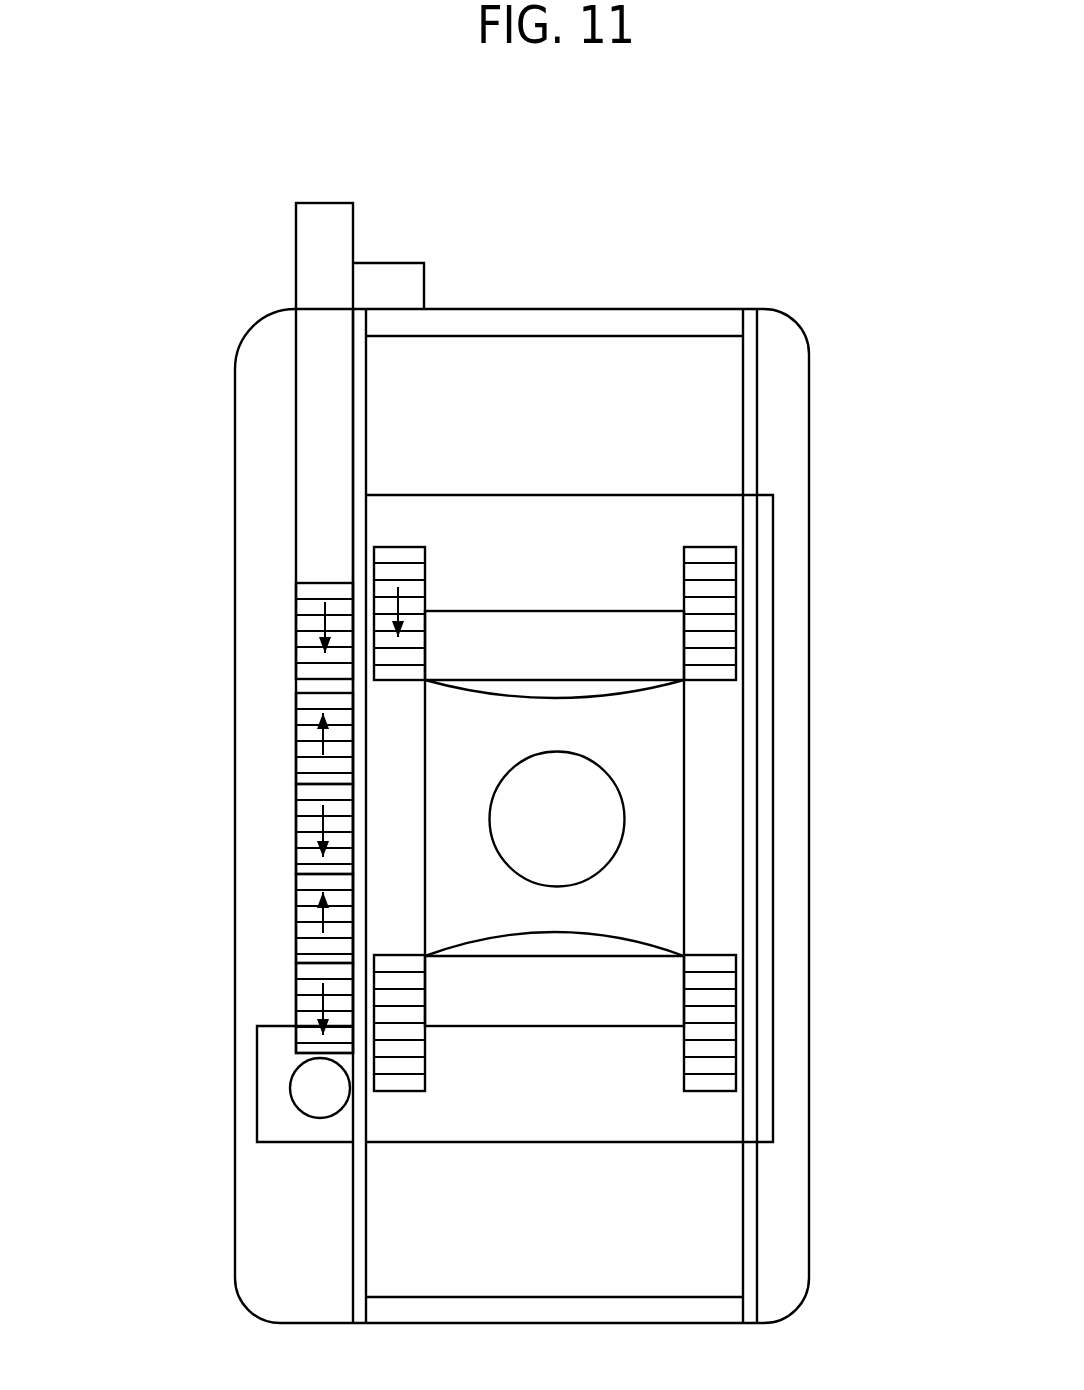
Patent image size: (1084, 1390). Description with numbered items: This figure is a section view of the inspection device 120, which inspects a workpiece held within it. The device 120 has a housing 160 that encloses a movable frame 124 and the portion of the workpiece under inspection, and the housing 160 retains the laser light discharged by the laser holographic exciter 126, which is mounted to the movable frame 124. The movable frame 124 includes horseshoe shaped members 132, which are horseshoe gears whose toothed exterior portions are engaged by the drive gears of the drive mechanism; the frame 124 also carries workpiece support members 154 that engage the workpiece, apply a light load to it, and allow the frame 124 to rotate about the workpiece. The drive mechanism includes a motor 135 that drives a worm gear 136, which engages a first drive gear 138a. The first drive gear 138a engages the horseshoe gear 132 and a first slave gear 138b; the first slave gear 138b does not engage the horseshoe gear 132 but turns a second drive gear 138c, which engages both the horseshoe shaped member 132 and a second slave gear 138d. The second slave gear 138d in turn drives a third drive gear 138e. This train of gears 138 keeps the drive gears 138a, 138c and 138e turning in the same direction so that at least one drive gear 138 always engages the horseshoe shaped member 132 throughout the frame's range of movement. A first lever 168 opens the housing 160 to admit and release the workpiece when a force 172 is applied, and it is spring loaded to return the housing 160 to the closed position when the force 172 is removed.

The inspection device 120 is at (687, 242).
The movable frame 124 is at (601, 606).
The laser holographic exciter 126 is at (608, 823).
The horseshoe shaped member 132 is at (407, 545).
The motor 135 is at (275, 1063).
The worm gear 136 is at (307, 1099).
The drive wheel or gear 138 is at (308, 562).
The first drive gear 138a is at (302, 1017).
The first slave gear 138b is at (302, 925).
The second drive gear 138c is at (302, 817).
The second slave gear 138d is at (302, 730).
The third drive gear 138e is at (302, 627).
The workpiece support member 154 is at (592, 698).
The housing 160 is at (793, 317).
The first lever 168 is at (310, 235).
The force 172 is at (400, 275).